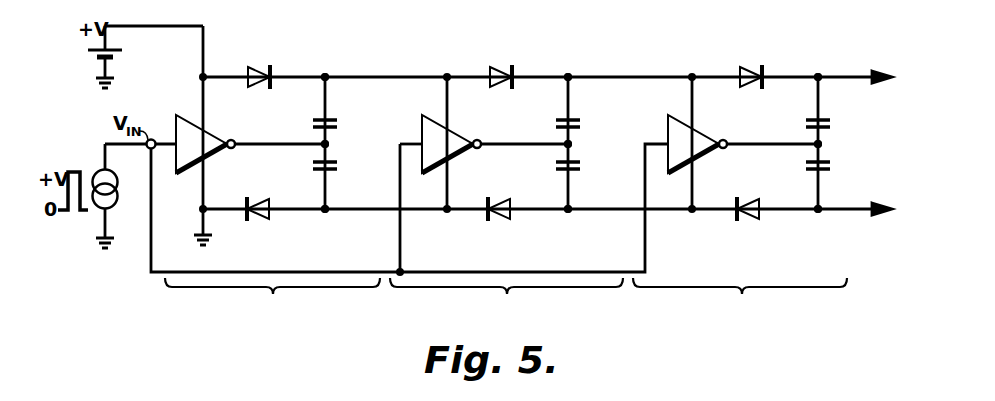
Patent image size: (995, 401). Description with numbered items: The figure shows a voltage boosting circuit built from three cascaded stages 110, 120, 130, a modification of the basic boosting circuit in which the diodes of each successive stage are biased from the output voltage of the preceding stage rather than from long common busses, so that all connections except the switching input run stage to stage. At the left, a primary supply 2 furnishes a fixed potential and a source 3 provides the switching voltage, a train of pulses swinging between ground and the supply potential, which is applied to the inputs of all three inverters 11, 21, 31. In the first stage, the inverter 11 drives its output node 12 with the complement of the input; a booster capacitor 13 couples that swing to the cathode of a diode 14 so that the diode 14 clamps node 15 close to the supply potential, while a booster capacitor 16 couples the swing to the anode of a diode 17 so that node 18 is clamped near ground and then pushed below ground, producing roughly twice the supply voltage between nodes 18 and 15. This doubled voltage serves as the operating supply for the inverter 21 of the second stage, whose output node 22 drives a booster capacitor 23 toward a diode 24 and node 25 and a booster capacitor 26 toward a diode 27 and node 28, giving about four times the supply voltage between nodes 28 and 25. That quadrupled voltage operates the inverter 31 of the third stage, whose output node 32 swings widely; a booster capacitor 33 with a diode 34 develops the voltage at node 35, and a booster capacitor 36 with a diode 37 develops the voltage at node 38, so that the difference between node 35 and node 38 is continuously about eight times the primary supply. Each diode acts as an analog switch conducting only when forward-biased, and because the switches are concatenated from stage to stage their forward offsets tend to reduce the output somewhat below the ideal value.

The primary supply 2 is at (82, 52).
The source of switching voltage 3 is at (124, 203).
The inverter 11 is at (219, 110).
The node 12 is at (330, 145).
The booster capacitor 13 is at (313, 124).
The diode 14 is at (251, 66).
The node 15 is at (314, 62).
The booster capacitor 16 is at (313, 166).
The diode 17 is at (269, 223).
The node 18 is at (342, 227).
The inverter 21 is at (462, 110).
The node 22 is at (573, 145).
The booster capacitor 23 is at (556, 124).
The diode 24 is at (490, 66).
The node 25 is at (553, 62).
The booster capacitor 26 is at (556, 166).
The diode 27 is at (512, 223).
The node 28 is at (585, 227).
The inverter 31 is at (710, 110).
The node 32 is at (823, 145).
The booster capacitor 33 is at (806, 124).
The diode 34 is at (739, 66).
The node 35 is at (803, 62).
The booster capacitor 36 is at (806, 166).
The diode 37 is at (763, 223).
The node 38 is at (834, 227).
The cascaded stage 110 is at (272, 301).
The cascaded stage 120 is at (506, 301).
The cascaded stage 130 is at (740, 301).